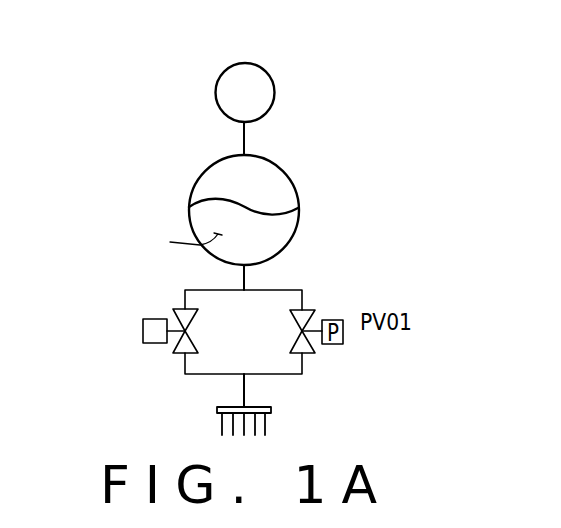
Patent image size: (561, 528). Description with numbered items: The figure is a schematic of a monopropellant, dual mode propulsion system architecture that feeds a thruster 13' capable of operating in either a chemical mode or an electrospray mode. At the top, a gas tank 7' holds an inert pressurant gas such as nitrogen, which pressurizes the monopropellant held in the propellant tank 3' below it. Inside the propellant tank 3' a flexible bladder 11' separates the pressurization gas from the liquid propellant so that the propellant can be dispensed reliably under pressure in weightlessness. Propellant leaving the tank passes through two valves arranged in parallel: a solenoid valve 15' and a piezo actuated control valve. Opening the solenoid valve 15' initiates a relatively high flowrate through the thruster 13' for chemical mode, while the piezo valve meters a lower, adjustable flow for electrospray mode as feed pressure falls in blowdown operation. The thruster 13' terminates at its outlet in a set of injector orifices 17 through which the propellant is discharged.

The gas tank 7' is at (235, 73).
The propellant tank 3' is at (198, 210).
The flexible bladder 11' is at (216, 183).
The solenoid valve 15' is at (135, 319).
The thruster 13' is at (191, 405).
The injector orifices 17 is at (265, 427).